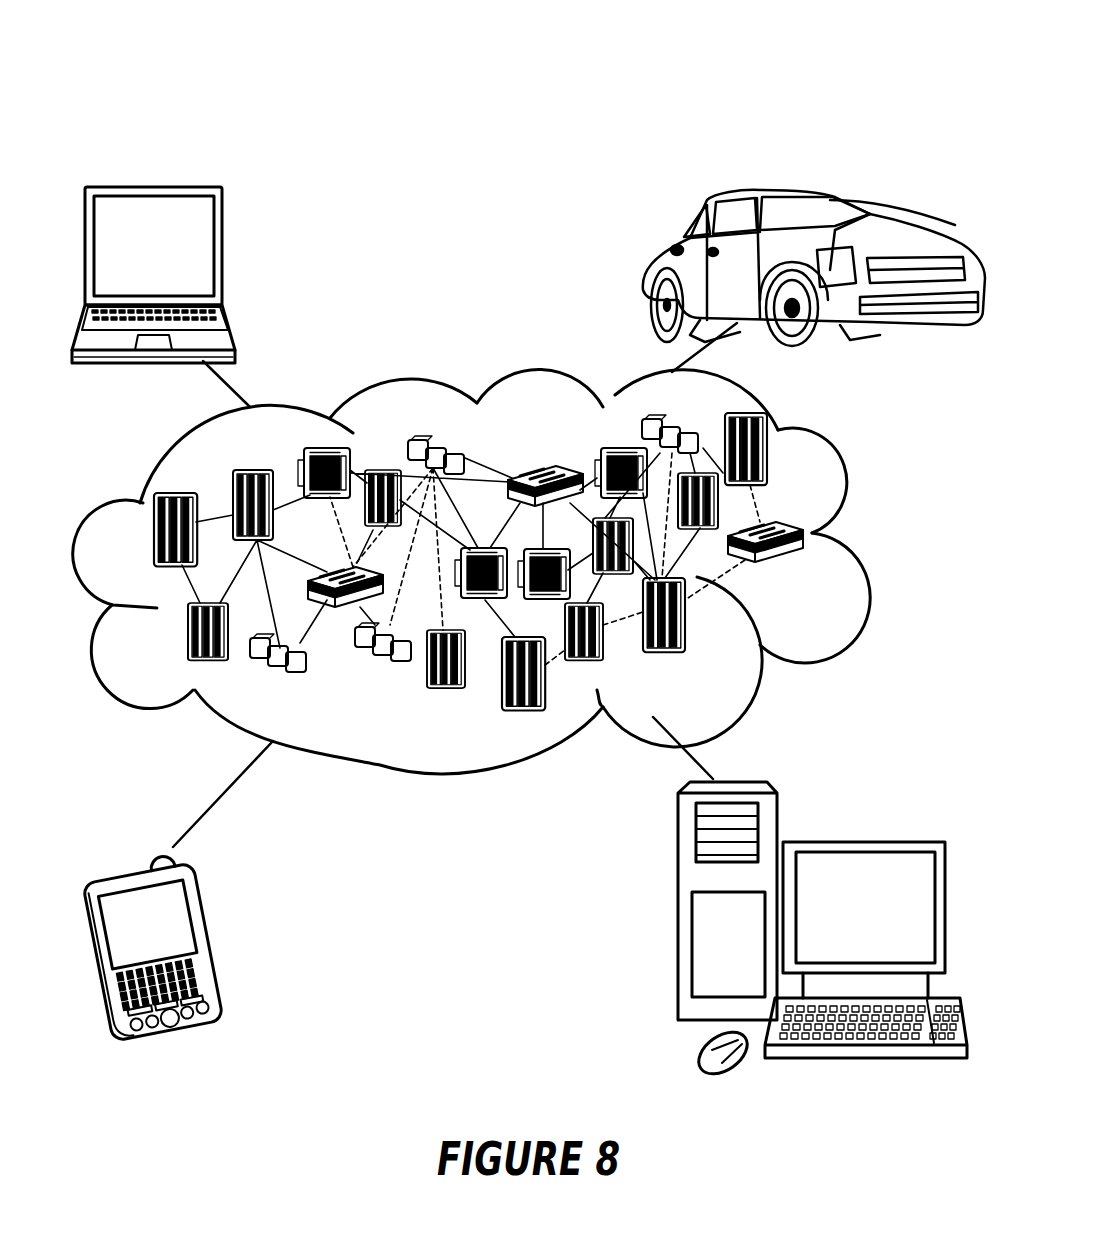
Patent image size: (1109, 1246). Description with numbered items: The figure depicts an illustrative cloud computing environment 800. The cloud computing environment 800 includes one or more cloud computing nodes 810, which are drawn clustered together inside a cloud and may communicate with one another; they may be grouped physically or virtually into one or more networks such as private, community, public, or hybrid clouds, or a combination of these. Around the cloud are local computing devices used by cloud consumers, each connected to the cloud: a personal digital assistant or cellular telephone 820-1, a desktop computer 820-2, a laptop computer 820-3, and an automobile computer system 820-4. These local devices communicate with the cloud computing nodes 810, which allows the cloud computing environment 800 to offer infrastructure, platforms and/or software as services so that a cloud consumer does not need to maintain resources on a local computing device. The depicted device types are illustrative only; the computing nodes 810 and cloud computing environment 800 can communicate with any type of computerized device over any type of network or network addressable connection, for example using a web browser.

The cloud computing environment 800 is at (803, 52).
The cloud computing nodes 810 is at (803, 571).
The personal digital assistant or cellular telephone 820-1 is at (214, 941).
The desktop computer 820-2 is at (870, 820).
The laptop computer 820-3 is at (224, 252).
The automobile computer system 820-4 is at (647, 270).